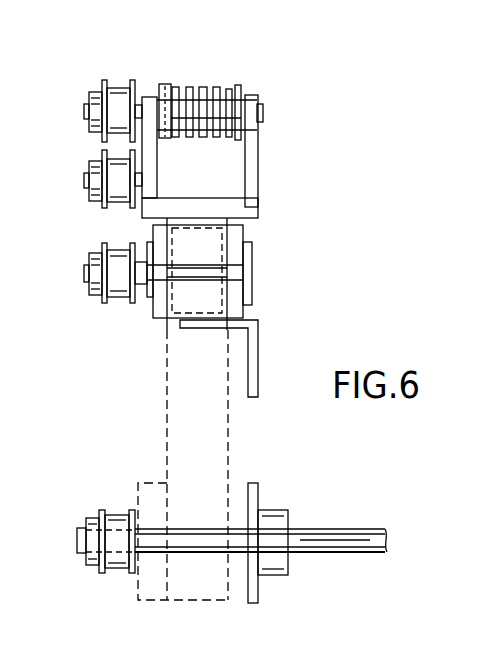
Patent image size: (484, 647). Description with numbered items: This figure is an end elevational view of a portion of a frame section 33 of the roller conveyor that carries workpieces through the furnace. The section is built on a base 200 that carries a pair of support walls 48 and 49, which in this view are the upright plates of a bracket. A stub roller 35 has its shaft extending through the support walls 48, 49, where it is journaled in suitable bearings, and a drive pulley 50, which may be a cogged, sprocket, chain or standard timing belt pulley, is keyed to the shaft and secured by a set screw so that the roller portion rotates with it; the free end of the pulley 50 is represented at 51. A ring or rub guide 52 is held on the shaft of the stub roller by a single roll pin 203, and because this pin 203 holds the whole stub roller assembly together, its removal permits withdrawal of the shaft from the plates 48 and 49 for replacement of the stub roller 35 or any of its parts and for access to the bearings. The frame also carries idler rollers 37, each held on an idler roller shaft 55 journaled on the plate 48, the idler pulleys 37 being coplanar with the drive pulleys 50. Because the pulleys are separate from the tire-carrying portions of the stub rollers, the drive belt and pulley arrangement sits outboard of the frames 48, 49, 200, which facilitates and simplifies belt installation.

The frame section 33 is at (103, 469).
The stub roller 35 is at (220, 95).
The idler roller 37 is at (122, 192).
The support wall 48 is at (147, 152).
The support wall 49 is at (252, 157).
The drive pulley 50 is at (117, 88).
The free end of pulley 51 is at (92, 98).
The rub guide 52 is at (163, 88).
The idler roller shaft 55 is at (90, 182).
The base 200 is at (209, 205).
The pin 203 is at (167, 80).